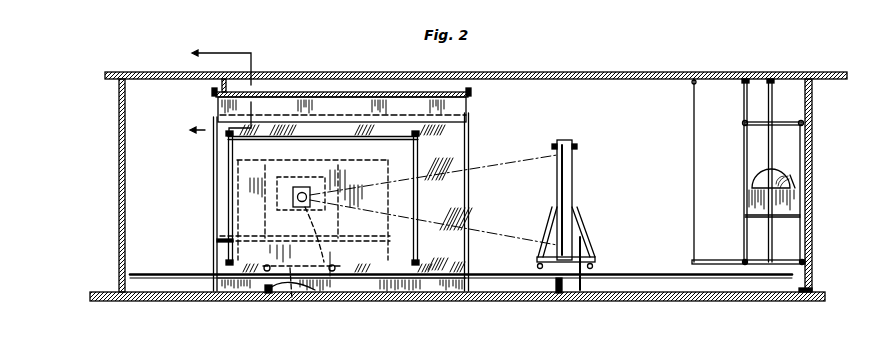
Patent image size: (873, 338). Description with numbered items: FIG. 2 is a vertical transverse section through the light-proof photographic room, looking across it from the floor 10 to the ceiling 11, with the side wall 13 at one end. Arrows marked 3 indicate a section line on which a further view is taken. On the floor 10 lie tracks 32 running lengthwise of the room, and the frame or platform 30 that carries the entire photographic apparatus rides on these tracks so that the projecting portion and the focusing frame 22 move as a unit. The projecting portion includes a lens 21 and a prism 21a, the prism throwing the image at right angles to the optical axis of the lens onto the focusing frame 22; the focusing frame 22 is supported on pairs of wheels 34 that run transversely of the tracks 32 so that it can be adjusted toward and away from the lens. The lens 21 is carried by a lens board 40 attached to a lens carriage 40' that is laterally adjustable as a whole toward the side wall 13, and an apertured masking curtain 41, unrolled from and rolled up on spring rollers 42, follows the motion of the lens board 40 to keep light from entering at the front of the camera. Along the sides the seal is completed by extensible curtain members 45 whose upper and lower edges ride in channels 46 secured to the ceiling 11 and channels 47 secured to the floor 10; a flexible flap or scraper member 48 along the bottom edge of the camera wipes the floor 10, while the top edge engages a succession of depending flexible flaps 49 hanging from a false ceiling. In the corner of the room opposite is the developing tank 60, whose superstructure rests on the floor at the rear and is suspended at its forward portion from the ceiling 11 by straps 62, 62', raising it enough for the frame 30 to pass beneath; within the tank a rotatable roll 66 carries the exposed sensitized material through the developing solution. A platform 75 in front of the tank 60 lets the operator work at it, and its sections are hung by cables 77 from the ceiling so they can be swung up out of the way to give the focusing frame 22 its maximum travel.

The section line of FIG. 3 is at (212, 94).
The floor 10 is at (710, 298).
The ceiling 11 is at (590, 84).
The side wall 13 is at (126, 212).
The lens 21 is at (300, 207).
The prism 21a is at (288, 161).
The focusing frame 22 is at (565, 143).
The frame or platform 30 is at (648, 278).
The tracks 32 is at (268, 297).
The pairs of wheels 34 is at (591, 268).
The lens board 40 is at (309, 306).
The lens carriage 40' is at (301, 299).
The apertured masking curtain 41 is at (363, 250).
The spring rollers 42 is at (420, 247).
The extensible curtain members 45 is at (470, 150).
The channels 46 is at (471, 93).
The channels 47 is at (470, 290).
The flexible flap or scraper member 48 is at (432, 286).
The depending flexible flaps 49 is at (469, 108).
The developing tank 60 is at (741, 175).
The strap 62 is at (773, 170).
The strap 62' is at (755, 170).
The rotatable roll 66 is at (791, 178).
The platform 75 is at (728, 243).
The cables 77 is at (694, 134).